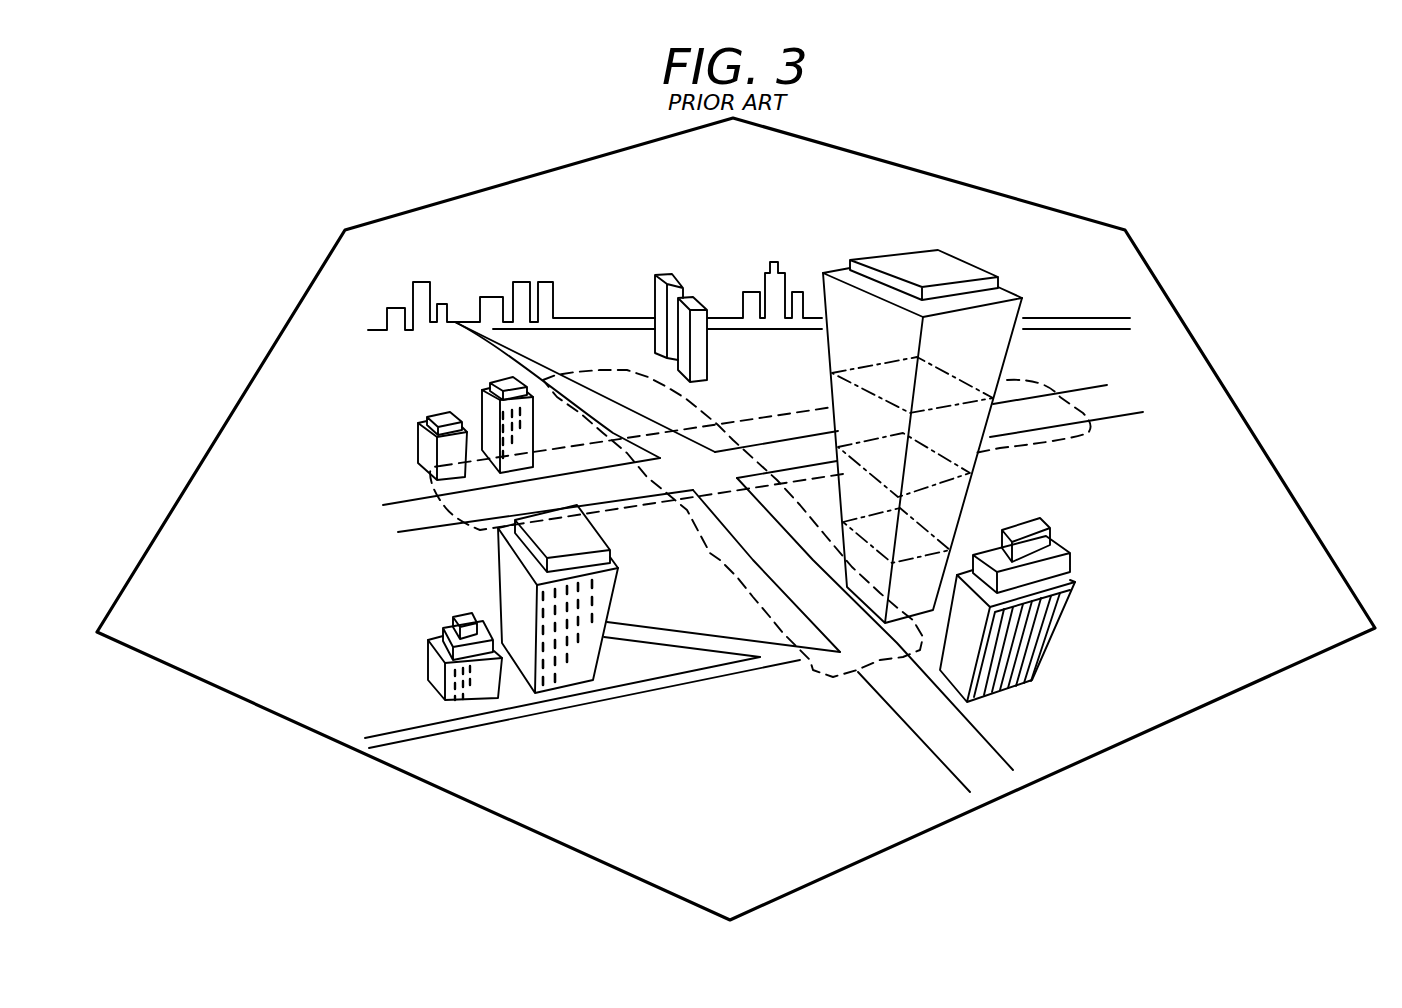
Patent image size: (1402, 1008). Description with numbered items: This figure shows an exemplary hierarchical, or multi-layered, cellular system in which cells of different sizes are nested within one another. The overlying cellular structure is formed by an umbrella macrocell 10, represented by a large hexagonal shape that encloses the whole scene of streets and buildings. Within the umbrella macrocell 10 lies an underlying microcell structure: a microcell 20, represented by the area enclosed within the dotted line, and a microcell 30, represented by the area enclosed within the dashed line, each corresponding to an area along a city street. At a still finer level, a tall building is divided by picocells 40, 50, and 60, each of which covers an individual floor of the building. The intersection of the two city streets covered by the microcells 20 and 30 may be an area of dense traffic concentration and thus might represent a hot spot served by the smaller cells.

The umbrella macrocell 10 is at (440, 785).
The microcell 20 is at (614, 366).
The microcell 30 is at (445, 505).
The picocell 40 is at (978, 392).
The picocell 50 is at (963, 475).
The picocell 60 is at (897, 563).